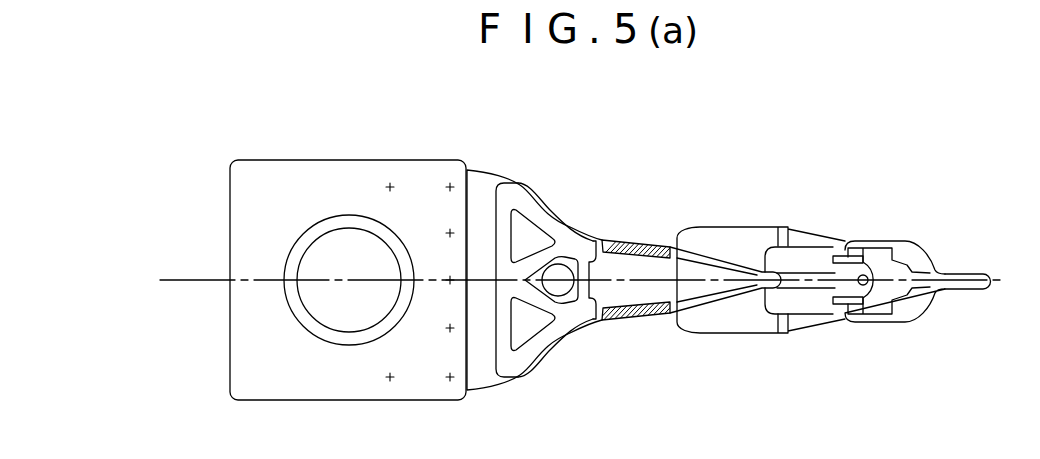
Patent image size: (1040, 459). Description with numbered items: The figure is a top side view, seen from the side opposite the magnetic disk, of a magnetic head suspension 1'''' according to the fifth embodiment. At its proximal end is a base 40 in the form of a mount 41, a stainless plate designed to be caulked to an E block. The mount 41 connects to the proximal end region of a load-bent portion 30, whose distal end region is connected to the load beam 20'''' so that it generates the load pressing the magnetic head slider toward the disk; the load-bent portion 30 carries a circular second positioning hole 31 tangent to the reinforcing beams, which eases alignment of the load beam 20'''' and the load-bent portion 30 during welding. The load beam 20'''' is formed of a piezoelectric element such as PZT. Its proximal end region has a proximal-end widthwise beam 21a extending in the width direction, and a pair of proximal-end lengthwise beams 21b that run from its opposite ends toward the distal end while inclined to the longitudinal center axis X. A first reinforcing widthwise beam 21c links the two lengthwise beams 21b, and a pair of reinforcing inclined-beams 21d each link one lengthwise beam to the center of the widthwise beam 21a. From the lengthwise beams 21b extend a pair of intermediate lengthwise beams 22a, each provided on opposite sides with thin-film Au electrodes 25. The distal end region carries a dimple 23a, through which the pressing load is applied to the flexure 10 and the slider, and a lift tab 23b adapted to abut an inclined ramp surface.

The magnetic head suspension 1'''' is at (627, 262).
The flexure 10 is at (756, 327).
The load beam 20'''' is at (596, 290).
The proximal-end widthwise beam 21a is at (500, 333).
The proximal-end lengthwise beams 21b is at (535, 213).
The first reinforcing widthwise beam 21c is at (588, 263).
The reinforcing inclined-beams 21d is at (532, 258).
The intermediate lengthwise beams 22a is at (733, 262).
The dimple 23a is at (865, 276).
The lift tab 23b is at (972, 275).
The electrodes 25 is at (642, 245).
The load-bent portion 30 is at (503, 159).
The second positioning hole 31 is at (560, 288).
The base 40 is at (348, 232).
The mount 41 is at (304, 143).
The longitudinal center axis X is at (190, 280).